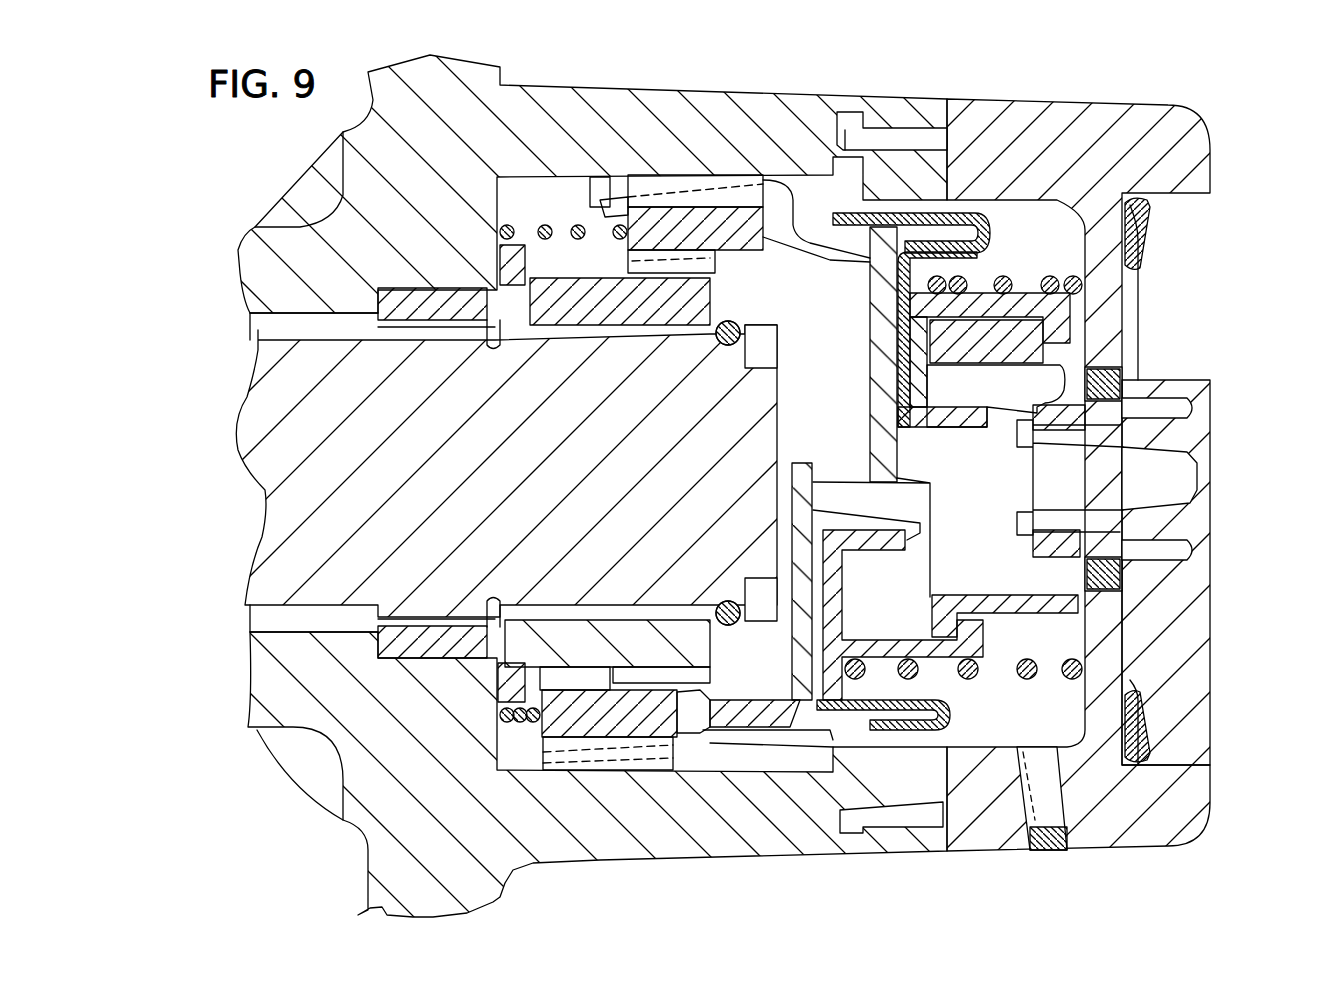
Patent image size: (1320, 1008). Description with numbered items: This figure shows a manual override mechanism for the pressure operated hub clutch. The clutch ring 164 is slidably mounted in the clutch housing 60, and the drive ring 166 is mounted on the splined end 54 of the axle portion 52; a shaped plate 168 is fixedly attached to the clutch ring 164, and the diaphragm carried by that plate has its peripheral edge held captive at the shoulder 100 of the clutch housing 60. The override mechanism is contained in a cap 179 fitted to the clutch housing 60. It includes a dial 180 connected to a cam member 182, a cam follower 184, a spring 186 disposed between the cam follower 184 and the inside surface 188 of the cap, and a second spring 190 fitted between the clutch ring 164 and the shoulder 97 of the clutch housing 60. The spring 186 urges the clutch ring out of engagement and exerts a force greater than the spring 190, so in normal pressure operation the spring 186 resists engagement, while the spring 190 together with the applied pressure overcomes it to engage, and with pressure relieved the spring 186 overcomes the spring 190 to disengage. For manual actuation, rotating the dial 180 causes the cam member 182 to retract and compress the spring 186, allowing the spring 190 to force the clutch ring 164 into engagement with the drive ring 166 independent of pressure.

The axle portion 52 is at (530, 529).
The splined end 54 is at (757, 330).
The clutch housing 60 is at (660, 90).
The shoulder 97 is at (500, 187).
The shoulder 100 is at (845, 113).
The clutch ring 164 is at (712, 227).
The drive ring 166 is at (570, 273).
The shaped plate 168 is at (803, 473).
The cap 179 is at (1093, 117).
The dial 180 is at (1177, 383).
The cam member 182 is at (1013, 597).
The cam follower 184 is at (893, 637).
The spring 186 is at (1005, 270).
The inside surface 188 is at (1082, 247).
The second spring 190 is at (533, 213).